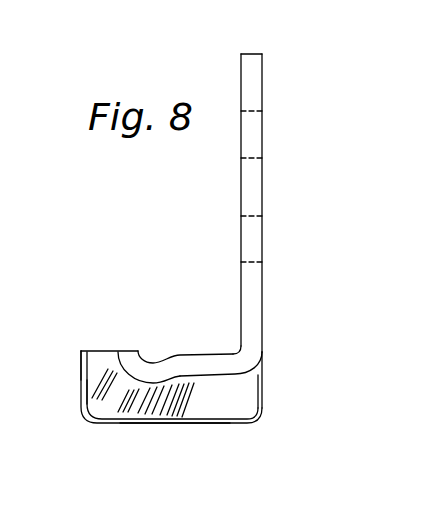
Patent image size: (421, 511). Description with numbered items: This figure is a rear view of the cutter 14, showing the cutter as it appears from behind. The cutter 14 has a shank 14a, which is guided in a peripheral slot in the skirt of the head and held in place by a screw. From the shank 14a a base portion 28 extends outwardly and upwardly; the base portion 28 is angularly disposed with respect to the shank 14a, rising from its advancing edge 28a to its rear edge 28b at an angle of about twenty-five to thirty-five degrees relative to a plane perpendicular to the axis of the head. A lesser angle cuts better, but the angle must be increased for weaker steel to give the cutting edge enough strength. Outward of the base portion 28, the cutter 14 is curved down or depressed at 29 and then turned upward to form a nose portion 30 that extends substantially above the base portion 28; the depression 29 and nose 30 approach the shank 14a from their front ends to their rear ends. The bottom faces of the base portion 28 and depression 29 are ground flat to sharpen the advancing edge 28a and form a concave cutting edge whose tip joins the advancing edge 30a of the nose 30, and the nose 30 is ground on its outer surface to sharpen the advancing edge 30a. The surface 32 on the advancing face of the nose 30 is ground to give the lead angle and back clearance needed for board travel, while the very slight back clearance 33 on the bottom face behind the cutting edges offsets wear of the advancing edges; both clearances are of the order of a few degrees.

The cutter 14 is at (265, 363).
The shank 14a is at (257, 201).
The base portion 28 is at (242, 391).
The advancing edge 28a is at (217, 423).
The rear edge 28b is at (218, 358).
The depression 29 is at (152, 362).
The nose portion 30 is at (110, 357).
The advancing edge of the nose 30a is at (81, 390).
The surface 32 is at (80, 365).
The clearance 33 is at (148, 423).